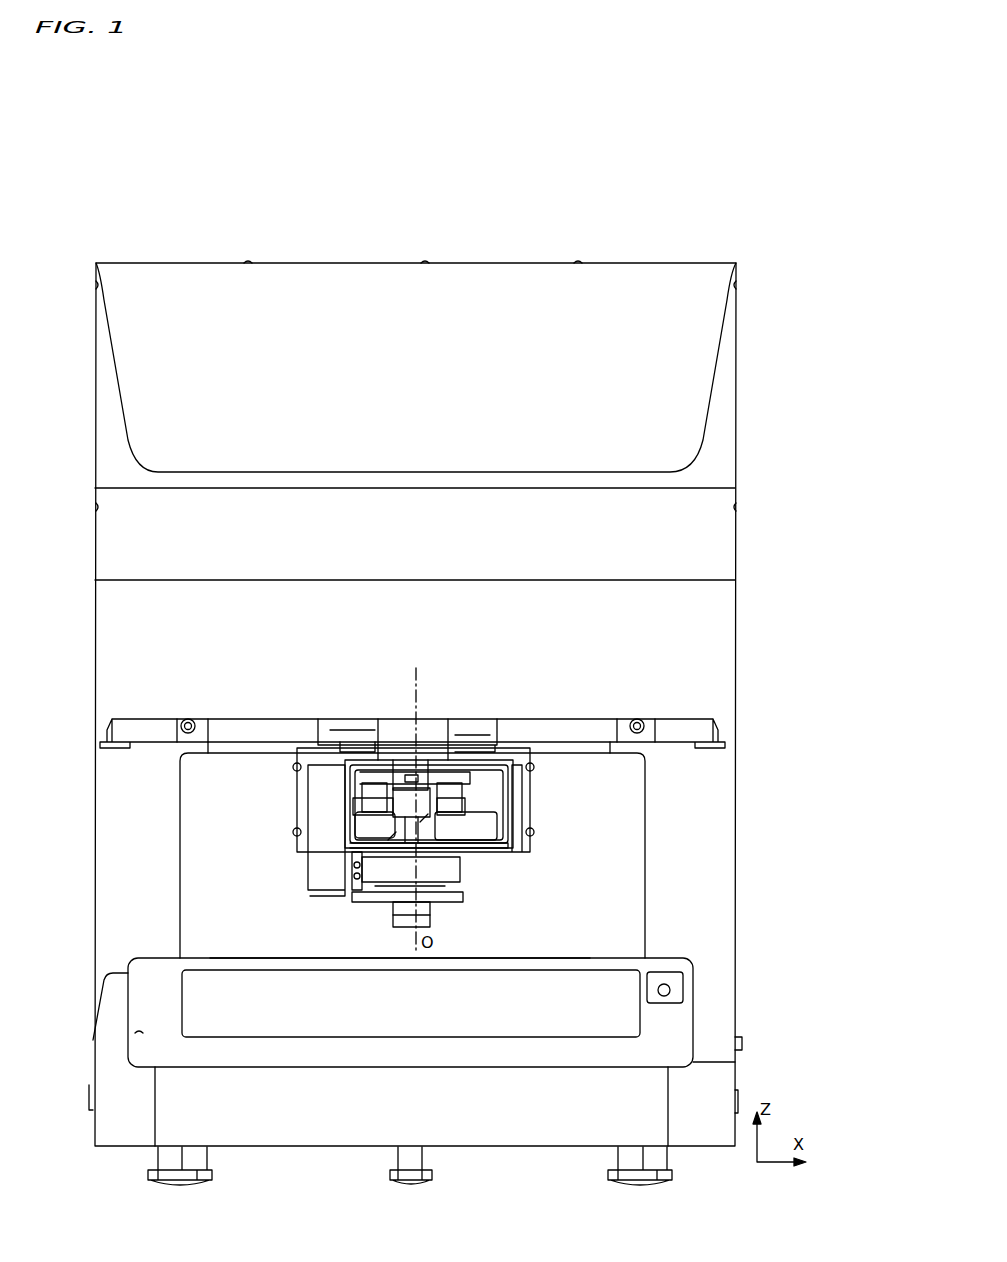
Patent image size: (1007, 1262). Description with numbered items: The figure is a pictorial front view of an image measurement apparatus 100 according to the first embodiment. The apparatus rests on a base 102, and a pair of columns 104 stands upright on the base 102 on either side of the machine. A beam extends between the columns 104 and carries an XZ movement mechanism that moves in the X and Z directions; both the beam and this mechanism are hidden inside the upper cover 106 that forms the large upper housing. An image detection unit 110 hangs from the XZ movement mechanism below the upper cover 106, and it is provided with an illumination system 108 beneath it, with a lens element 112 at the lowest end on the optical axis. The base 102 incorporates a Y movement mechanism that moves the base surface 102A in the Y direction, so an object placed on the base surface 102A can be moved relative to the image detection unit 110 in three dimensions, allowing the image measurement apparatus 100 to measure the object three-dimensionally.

The image measurement apparatus 100 is at (508, 210).
The base 102 is at (693, 958).
The base surface 102A is at (520, 957).
The columns 104 is at (152, 857).
The upper cover 106 is at (519, 637).
The illumination system 108 is at (388, 900).
The image detection unit 110 is at (501, 862).
The objective lens 112 is at (408, 917).